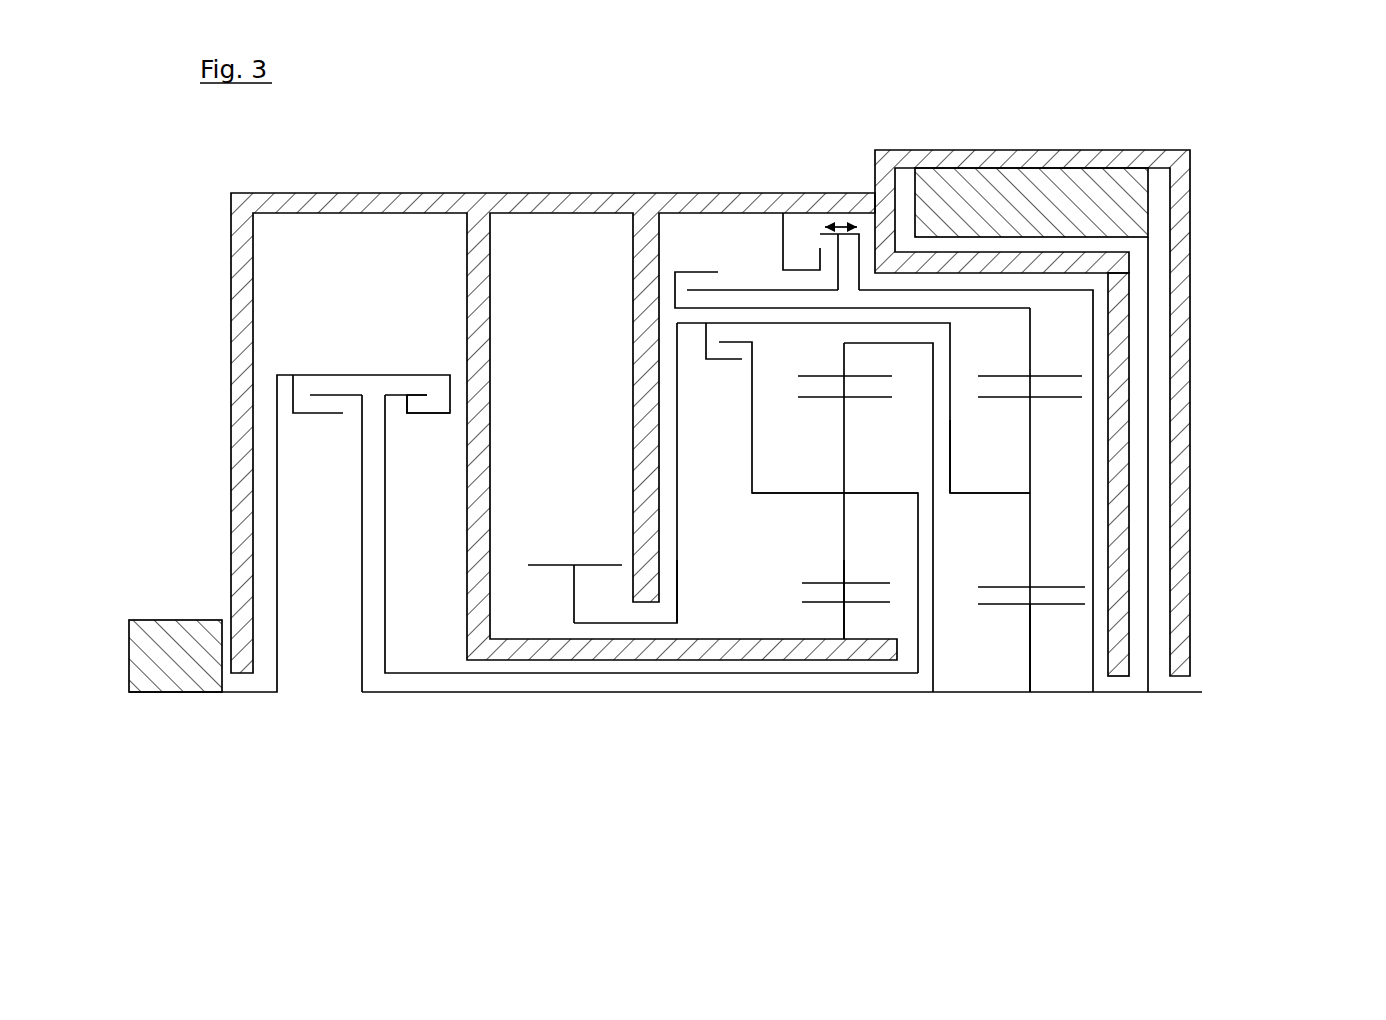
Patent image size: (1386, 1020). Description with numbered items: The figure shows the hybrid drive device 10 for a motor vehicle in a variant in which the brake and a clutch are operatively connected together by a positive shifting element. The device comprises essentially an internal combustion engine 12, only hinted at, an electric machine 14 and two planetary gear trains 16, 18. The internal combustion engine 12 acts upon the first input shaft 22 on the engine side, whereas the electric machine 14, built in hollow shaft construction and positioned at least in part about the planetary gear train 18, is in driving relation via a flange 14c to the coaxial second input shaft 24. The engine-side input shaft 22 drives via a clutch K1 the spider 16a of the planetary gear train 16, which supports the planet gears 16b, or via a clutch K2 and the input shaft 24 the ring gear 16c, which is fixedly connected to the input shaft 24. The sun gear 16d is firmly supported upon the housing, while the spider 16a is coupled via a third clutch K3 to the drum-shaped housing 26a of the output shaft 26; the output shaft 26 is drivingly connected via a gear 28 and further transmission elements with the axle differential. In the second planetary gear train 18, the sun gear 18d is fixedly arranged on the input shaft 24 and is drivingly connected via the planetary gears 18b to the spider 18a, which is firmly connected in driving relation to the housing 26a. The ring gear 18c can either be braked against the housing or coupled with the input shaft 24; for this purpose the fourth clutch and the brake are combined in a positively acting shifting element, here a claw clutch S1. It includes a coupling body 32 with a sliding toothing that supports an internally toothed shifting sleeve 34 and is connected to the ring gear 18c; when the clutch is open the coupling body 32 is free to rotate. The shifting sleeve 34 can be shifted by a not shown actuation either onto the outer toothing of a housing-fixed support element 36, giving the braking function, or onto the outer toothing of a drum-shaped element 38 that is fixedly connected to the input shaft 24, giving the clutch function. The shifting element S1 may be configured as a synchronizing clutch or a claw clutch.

The hybrid drive device 10 is at (413, 168).
The internal combustion engine 12 is at (160, 614).
The electric machine 14 is at (1080, 377).
The flange 14c is at (1148, 273).
The planetary gear train 16 is at (770, 507).
The spider 16a is at (789, 493).
The planet gears 16b is at (807, 400).
The ring gear 16c is at (844, 362).
The sun gear 16d is at (843, 625).
The planetary gear train 18 is at (1160, 500).
The spider 18a is at (1010, 493).
The planetary gears 18b is at (1063, 585).
The ring gear 18c is at (1028, 338).
The sun gear 18d is at (1032, 635).
The first input shaft 22 is at (413, 657).
The second input shaft 24 is at (482, 692).
The output shaft 26 is at (620, 623).
The drum-shaped housing 26a is at (680, 587).
The gear 28 is at (548, 565).
The coupling body 32 is at (835, 288).
The shifting sleeve 34 is at (841, 232).
The support element 36 is at (818, 265).
The drum-shaped element 38 is at (915, 235).
The clutch K1 is at (417, 386).
The clutch K2 is at (330, 386).
The third clutch K3 is at (698, 334).
The claw clutch S1 is at (890, 356).